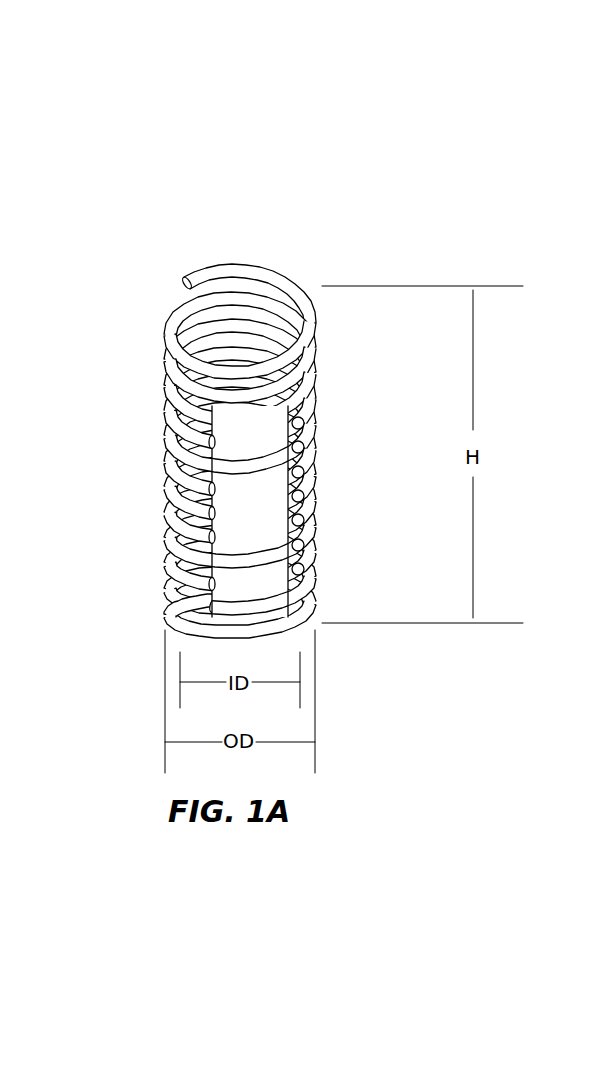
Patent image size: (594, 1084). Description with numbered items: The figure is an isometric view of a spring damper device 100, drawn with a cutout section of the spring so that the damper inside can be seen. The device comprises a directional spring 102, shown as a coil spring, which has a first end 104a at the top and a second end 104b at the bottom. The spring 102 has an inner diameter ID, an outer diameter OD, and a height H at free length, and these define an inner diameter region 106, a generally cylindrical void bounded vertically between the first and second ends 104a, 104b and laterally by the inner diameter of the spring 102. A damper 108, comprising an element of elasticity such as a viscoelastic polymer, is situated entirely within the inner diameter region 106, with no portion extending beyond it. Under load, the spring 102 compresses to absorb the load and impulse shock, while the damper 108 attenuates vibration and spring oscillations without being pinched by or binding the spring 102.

The spring damper device 100 is at (227, 355).
The directional spring 102 is at (167, 358).
The first end 104a is at (238, 271).
The second end 104b is at (310, 570).
The inner diameter region 106 is at (262, 296).
The damper 108 is at (279, 437).